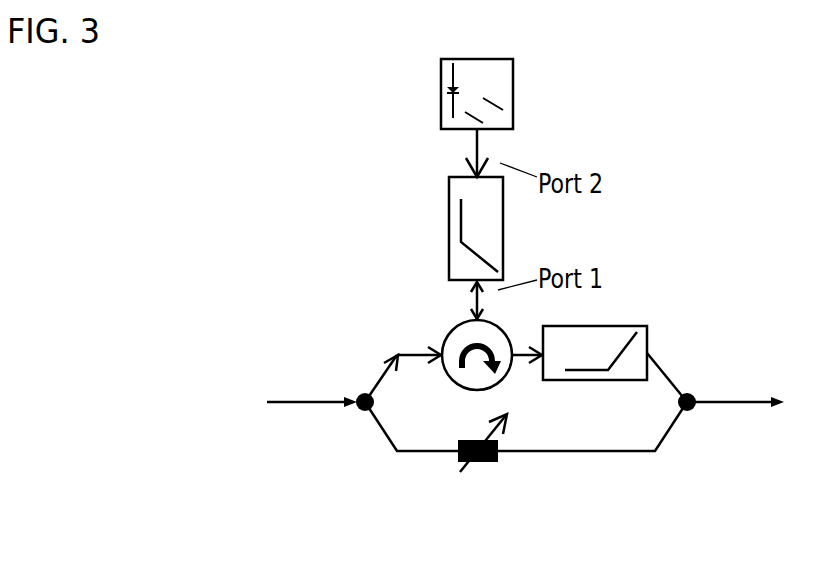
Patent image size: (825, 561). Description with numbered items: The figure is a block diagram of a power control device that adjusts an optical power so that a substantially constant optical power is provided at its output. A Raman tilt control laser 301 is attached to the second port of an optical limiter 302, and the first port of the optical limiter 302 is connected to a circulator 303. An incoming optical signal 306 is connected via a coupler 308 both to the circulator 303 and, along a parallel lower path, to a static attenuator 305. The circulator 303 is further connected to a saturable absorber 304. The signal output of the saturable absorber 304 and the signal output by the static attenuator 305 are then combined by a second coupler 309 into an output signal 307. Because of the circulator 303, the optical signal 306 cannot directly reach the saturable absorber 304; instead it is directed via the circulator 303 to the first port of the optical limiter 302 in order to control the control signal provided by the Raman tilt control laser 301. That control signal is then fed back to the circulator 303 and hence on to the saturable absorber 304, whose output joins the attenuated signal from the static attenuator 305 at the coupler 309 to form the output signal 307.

The Raman tilt control laser 301 is at (442, 67).
The optical limiter 302 is at (449, 208).
The circulator 303 is at (445, 322).
The saturable absorber 304 is at (616, 333).
The static attenuator 305 is at (480, 463).
The optical signal 306 is at (283, 405).
The output signal 307 is at (727, 403).
The coupler 308 is at (360, 392).
The coupler 309 is at (687, 385).